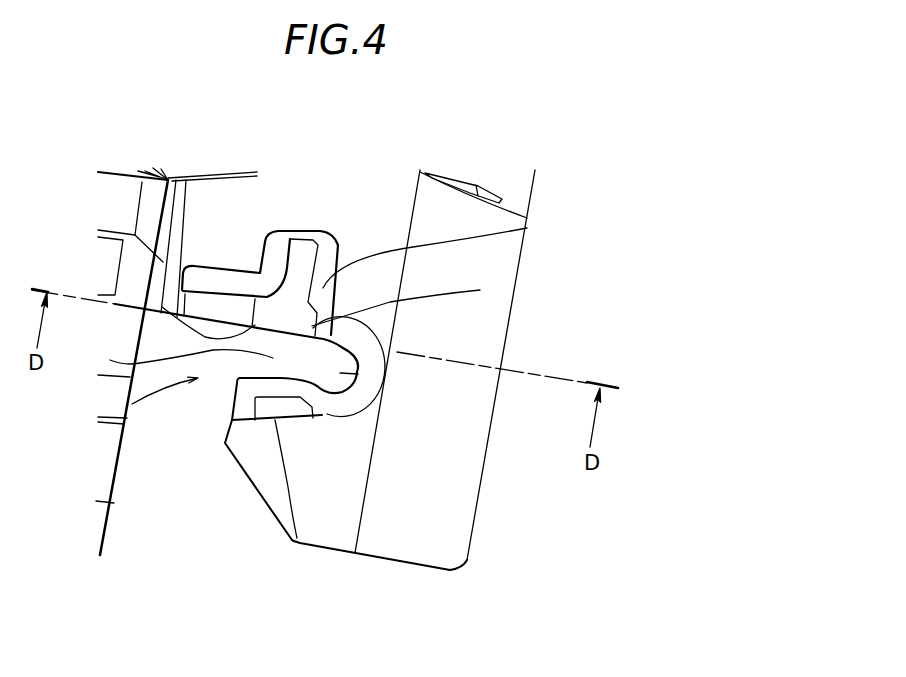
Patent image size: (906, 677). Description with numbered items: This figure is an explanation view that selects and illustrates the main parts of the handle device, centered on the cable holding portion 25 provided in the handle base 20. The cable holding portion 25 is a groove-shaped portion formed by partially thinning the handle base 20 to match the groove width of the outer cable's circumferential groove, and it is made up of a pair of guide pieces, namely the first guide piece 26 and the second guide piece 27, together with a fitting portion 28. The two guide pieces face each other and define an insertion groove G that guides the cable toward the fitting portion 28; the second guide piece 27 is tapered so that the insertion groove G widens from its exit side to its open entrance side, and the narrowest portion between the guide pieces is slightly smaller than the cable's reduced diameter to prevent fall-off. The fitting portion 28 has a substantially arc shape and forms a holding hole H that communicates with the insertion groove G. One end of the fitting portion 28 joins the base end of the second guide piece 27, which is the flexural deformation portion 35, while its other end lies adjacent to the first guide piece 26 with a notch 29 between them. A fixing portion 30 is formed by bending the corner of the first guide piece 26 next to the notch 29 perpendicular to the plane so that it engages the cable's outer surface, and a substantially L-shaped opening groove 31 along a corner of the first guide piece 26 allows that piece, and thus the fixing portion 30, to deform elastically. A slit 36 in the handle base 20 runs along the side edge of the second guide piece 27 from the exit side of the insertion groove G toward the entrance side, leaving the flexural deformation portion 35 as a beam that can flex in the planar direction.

The handle base 20 is at (473, 535).
The cable holding portion 25 is at (128, 413).
The first guide piece 26 is at (162, 307).
The second guide piece 27 is at (240, 383).
The fitting portion 28 is at (348, 388).
The notch 29 is at (527, 228).
The fixing portion 30 is at (480, 290).
The opening groove 31 is at (223, 283).
The flexural deformation portion 35 is at (330, 363).
The slit 36 is at (295, 538).
The insertion groove G is at (182, 371).
The holding hole H is at (340, 373).